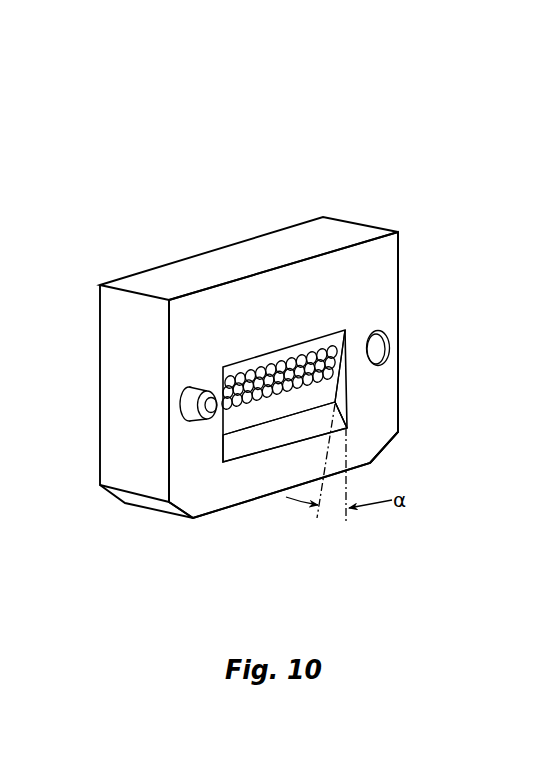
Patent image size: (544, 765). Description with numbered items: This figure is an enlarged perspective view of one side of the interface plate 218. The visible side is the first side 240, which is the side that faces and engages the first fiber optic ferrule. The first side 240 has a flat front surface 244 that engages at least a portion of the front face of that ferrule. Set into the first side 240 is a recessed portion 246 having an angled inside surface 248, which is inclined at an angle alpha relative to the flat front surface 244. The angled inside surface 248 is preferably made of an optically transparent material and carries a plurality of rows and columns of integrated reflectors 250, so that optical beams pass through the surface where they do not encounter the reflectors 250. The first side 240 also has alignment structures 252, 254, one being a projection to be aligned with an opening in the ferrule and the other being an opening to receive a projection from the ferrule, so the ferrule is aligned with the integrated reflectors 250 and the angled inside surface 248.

The interface plate 218 is at (345, 158).
The first side 240 is at (427, 302).
The flat front surface 244 is at (383, 413).
The recessed portion 246 is at (253, 443).
The angled inside surface 248 is at (267, 413).
The integrated reflectors 250 is at (275, 372).
The alignment structure 252 is at (207, 419).
The alignment structure 254 is at (380, 349).